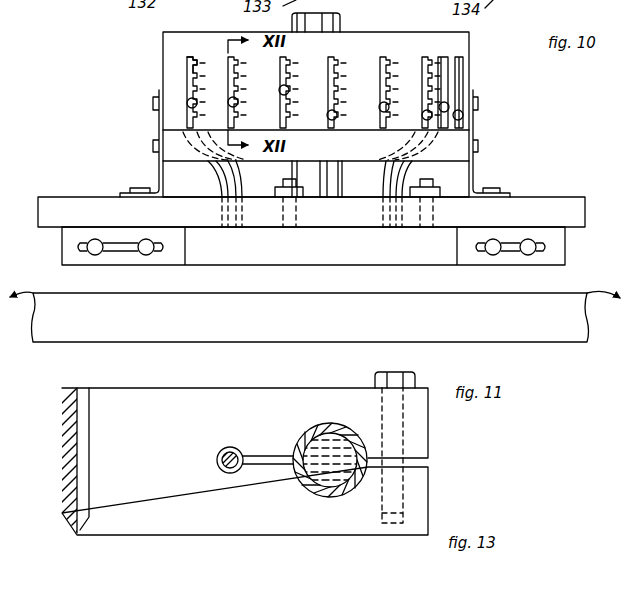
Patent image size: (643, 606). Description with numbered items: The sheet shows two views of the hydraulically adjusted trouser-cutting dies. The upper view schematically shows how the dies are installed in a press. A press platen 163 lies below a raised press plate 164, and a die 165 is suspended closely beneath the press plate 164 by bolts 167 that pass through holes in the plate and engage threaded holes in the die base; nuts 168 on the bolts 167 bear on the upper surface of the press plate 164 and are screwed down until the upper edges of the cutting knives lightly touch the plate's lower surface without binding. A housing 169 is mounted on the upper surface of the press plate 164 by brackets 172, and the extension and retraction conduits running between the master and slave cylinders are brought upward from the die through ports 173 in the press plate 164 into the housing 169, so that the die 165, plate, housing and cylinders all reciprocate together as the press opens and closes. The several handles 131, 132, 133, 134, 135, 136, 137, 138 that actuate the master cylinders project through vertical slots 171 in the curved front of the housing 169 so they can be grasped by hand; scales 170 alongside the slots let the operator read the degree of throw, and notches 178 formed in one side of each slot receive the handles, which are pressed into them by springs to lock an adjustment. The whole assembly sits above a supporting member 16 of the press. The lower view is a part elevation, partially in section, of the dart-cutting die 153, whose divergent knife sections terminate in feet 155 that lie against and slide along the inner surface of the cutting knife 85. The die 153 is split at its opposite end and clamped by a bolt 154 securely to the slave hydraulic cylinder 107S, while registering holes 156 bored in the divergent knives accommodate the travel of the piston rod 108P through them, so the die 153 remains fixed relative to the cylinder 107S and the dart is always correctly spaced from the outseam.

In FIG. 11, the rail 16 is at (592, 293).
In FIG. 13, the cutting knife 85 is at (70, 410).
In FIG. 13, the slave hydraulic cylinder 107S is at (310, 434).
In FIG. 13, the piston rod 108P is at (222, 468).
In FIG. 11, the handle 131 is at (188, 100).
In FIG. 11, the handle 132 is at (198, 103).
In FIG. 11, the handle 133 is at (243, 99).
In FIG. 11, the handle 134 is at (329, 112).
In FIG. 11, the handle 135 is at (350, 103).
In FIG. 11, the handle 136 is at (424, 112).
In FIG. 11, the handle 137 is at (448, 97).
In FIG. 11, the handle 138 is at (464, 115).
In FIG. 13, the dart-cutting die 153 is at (162, 402).
In FIG. 13, the bolt 154 is at (378, 378).
In FIG. 13, the divergent ends or feet 155 is at (84, 440).
In FIG. 13, the registering holes 156 is at (221, 452).
In FIG. 11, the press platen 163 is at (582, 331).
In FIG. 11, the press plate 164 is at (555, 200).
In FIG. 11, the die 165 is at (555, 261).
In FIG. 11, the bolts 167 is at (288, 184).
In FIG. 11, the nuts 168 is at (440, 186).
In FIG. 11, the housing 169 is at (463, 50).
In FIG. 11, the scales 170 is at (200, 58).
In FIG. 11, the vertical slots 171 is at (188, 58).
In FIG. 11, the brackets 172 is at (158, 182).
In FIG. 11, the ports 173 is at (252, 224).
In FIG. 11, the notches 178 is at (193, 72).